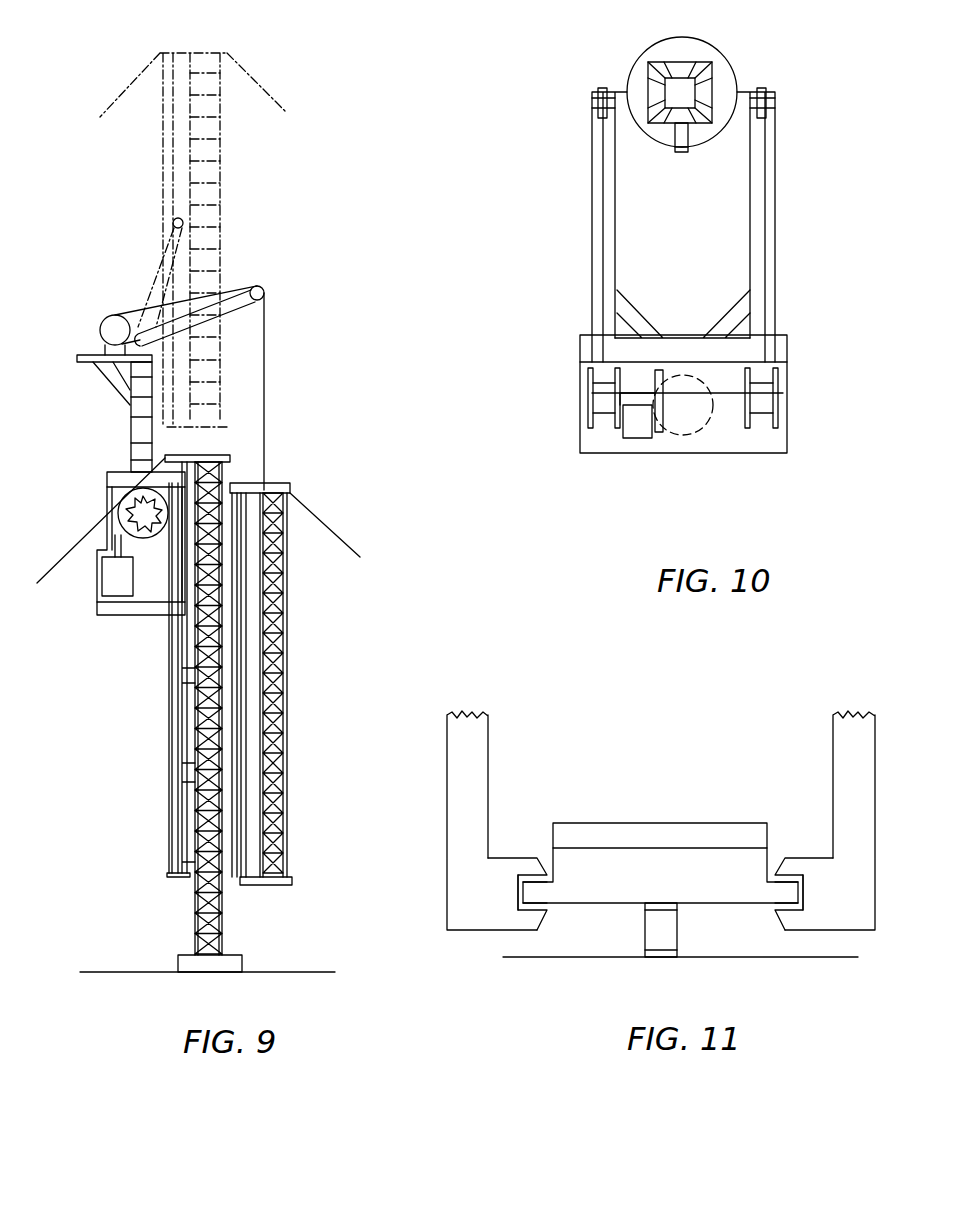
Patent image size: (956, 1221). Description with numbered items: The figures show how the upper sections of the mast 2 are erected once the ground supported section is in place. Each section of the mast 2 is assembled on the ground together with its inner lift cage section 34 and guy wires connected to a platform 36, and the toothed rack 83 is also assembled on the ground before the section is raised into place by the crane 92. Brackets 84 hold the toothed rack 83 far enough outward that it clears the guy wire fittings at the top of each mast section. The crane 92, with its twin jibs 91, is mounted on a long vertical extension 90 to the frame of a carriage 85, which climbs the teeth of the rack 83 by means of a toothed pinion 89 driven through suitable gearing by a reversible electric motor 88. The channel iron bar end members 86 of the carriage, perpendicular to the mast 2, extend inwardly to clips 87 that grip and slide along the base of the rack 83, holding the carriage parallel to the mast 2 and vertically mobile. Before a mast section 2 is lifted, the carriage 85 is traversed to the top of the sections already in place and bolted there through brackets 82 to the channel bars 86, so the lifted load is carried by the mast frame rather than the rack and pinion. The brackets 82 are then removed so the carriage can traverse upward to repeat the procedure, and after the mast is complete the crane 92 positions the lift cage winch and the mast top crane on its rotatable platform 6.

In FIG. 9, the mast 2 is at (287, 697).
In FIG. 10, the mast 2 is at (665, 65).
In FIG. 11, the mast 2 is at (572, 957).
In FIG. 10, the rotatable platform 6 is at (705, 45).
In FIG. 10, the inner lift cage section 34 is at (700, 80).
In FIG. 9, the platform 36 is at (290, 493).
In FIG. 9, the bracket 82 is at (188, 457).
In FIG. 9, the toothed rack 83 is at (167, 697).
In FIG. 10, the toothed rack 83 is at (680, 153).
In FIG. 11, the toothed rack 83 is at (683, 857).
In FIG. 9, the bracket 84 is at (187, 771).
In FIG. 11, the bracket 84 is at (693, 930).
In FIG. 9, the carriage 85 is at (103, 542).
In FIG. 9, the channel iron bar end member 86 is at (138, 612).
In FIG. 11, the channel iron bar end member 86 is at (457, 793).
In FIG. 11, the clip 87 is at (493, 883).
In FIG. 9, the reversible electric motor 88 is at (107, 580).
In FIG. 9, the toothed pinion 89 is at (113, 507).
In FIG. 9, the vertical extension 90 is at (130, 410).
In FIG. 9, the twin jib 91 is at (258, 285).
In FIG. 10, the twin jib 91 is at (592, 225).
In FIG. 9, the crane 92 is at (100, 330).
In FIG. 10, the crane 92 is at (597, 397).